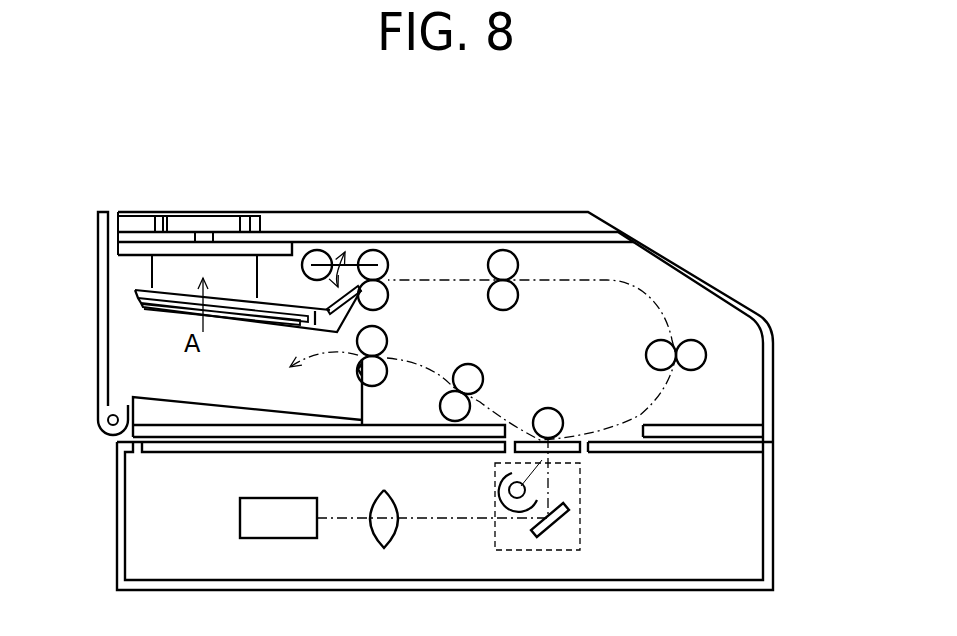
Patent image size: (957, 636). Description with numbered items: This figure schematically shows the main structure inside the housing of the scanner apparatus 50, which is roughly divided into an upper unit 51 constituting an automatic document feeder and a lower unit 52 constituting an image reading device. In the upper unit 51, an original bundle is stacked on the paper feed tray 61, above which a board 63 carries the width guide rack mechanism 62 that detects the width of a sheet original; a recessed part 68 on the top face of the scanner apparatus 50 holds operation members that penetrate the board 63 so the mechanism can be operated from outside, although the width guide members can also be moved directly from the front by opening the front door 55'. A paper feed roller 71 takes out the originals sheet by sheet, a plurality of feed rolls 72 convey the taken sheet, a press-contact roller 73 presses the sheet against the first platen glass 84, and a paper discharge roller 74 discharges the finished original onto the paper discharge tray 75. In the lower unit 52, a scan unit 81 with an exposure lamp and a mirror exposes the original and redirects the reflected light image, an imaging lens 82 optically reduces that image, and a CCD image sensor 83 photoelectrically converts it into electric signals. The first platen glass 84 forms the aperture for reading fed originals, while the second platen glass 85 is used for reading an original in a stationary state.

The scanner apparatus 50 is at (623, 184).
The upper unit 51 is at (766, 312).
The lower unit 52 is at (786, 497).
The front door 55' is at (78, 323).
The paper feed tray 61 is at (128, 317).
The width guide rack mechanism 62 is at (128, 269).
The board 63 is at (133, 245).
The recessed part 68 is at (160, 216).
The paper feed roller 71 is at (355, 253).
The feed rolls 72 is at (505, 304).
The press-contact roller 73 is at (552, 414).
The paper discharge roller 74 is at (385, 337).
The paper discharge tray 75 is at (160, 418).
The scan unit 81 is at (581, 535).
The imaging lens 82 is at (386, 492).
The CCD image sensor 83 is at (283, 498).
The first platen glass 84 is at (562, 452).
The second platen glass 85 is at (192, 452).